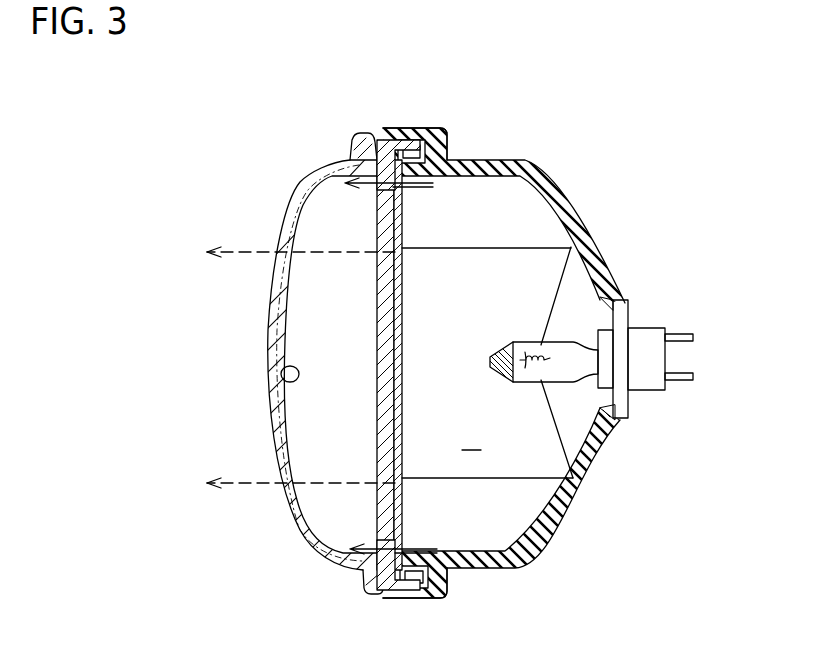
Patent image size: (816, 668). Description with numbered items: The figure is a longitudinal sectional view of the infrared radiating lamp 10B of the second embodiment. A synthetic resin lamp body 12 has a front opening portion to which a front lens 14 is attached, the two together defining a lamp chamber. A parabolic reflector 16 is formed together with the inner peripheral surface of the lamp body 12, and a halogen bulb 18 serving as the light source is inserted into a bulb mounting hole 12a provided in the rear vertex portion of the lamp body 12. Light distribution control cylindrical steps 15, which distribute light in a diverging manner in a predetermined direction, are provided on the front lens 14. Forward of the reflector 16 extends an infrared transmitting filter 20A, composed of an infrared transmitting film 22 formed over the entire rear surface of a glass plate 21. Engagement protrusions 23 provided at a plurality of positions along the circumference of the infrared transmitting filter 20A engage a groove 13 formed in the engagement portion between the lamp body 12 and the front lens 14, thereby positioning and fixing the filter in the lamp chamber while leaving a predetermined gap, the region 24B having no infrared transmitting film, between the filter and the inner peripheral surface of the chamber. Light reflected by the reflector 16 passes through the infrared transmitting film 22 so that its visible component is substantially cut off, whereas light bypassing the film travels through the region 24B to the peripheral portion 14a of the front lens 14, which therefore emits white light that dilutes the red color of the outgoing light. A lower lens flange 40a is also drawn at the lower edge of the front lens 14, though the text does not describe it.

The vehicle lamp 10B is at (265, 218).
The lamp housing 12 is at (567, 202).
The bulb insertion opening 12a is at (614, 376).
The mounting bracket 13 is at (362, 158).
The lens 14 is at (268, 311).
The lens flange 14a is at (287, 185).
The lens step 15 is at (293, 380).
The socket flange 16 is at (592, 283).
The light source bulb 18 is at (568, 377).
The light-transmitting reflector plate 20A is at (454, 359).
The base plate 21 is at (398, 296).
The reflective layer 22 is at (400, 340).
The engagement groove 23 is at (400, 165).
The housing flange 24B is at (450, 177).
The lens lower flange 40a is at (340, 540).